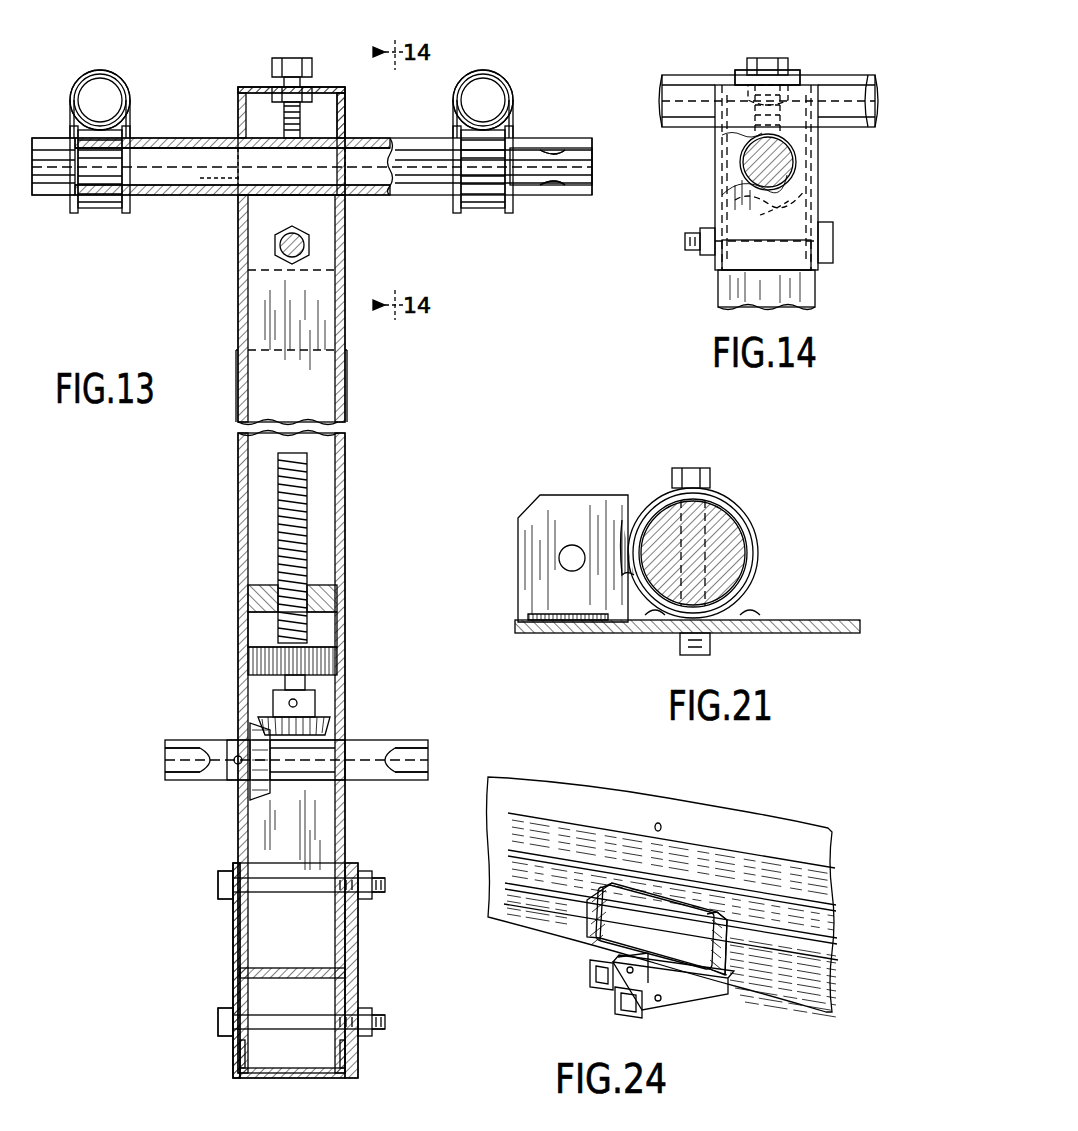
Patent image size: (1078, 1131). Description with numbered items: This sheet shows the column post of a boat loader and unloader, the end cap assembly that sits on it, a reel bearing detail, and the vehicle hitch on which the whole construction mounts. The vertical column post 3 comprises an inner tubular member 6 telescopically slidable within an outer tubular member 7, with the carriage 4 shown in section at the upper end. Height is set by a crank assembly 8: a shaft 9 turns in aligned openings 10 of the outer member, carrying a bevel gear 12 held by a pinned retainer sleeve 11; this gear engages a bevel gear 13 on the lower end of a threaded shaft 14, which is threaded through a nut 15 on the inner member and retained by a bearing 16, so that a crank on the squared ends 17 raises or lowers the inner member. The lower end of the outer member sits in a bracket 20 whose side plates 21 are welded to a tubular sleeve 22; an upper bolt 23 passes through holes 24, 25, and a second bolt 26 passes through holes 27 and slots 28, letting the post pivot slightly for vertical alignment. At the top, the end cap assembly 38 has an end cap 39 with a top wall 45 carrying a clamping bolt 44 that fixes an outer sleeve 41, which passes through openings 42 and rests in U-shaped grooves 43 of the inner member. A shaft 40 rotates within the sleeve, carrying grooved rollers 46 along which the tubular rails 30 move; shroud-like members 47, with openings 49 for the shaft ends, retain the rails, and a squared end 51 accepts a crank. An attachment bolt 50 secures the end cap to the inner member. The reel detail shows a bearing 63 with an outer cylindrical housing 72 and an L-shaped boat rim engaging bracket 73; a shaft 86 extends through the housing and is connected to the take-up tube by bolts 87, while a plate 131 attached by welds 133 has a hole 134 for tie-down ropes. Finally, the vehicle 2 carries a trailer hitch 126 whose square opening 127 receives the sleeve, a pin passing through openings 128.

In FIG. 24, the vehicle 2 is at (762, 828).
In FIG. 13, the vertical column post 3 is at (236, 452).
In FIG. 13, the carriage 4 is at (160, 200).
In FIG. 13, the inner tubular member 6 is at (238, 300).
In FIG. 14, the inner tubular member 6 is at (735, 288).
In FIG. 13, the outer tubular member 7 is at (238, 632).
In FIG. 13, the crank assembly 8 is at (283, 790).
In FIG. 13, the shaft 9 is at (369, 746).
In FIG. 13, the aligned openings 10 is at (245, 741).
In FIG. 13, the pinned retainer sleeve 11 is at (240, 748).
In FIG. 13, the bevel gear 12 is at (258, 790).
In FIG. 13, the bevel gear 13 is at (330, 720).
In FIG. 13, the threaded shaft 14 is at (308, 490).
In FIG. 13, the nut 15 is at (337, 606).
In FIG. 13, the bearing 16 is at (258, 660).
In FIG. 13, the squared ends 17 is at (168, 760).
In FIG. 13, the bracket 20 is at (362, 937).
In FIG. 13, the side plates 21 is at (233, 948).
In FIG. 13, the tubular sleeve 22 is at (256, 1076).
In FIG. 13, the upper bolt 23 is at (216, 892).
In FIG. 13, the holes 24 is at (362, 865).
In FIG. 13, the holes 25 is at (350, 869).
In FIG. 13, the second bolt 26 is at (218, 1023).
In FIG. 13, the holes 27 is at (358, 1014).
In FIG. 13, the slots 28 is at (236, 1040).
In FIG. 13, the tubular rails 30 is at (87, 78).
In FIG. 14, the tubular rails 30 is at (682, 75).
In FIG. 13, the end cap assembly 38 is at (235, 88).
In FIG. 14, the end cap assembly 38 is at (828, 182).
In FIG. 13, the end cap 39 is at (345, 116).
In FIG. 14, the end cap 39 is at (800, 262).
In FIG. 13, the shaft 40 is at (528, 180).
In FIG. 14, the shaft 40 is at (752, 176).
In FIG. 13, the outer sleeve 41 is at (185, 138).
In FIG. 14, the outer sleeve 41 is at (796, 148).
In FIG. 13, the openings 42 is at (240, 140).
In FIG. 14, the openings 42 is at (788, 182).
In FIG. 13, the U-shaped grooves 43 is at (240, 193).
In FIG. 14, the U-shaped grooves 43 is at (740, 188).
In FIG. 13, the clamping bolt 44 is at (300, 62).
In FIG. 14, the clamping bolt 44 is at (770, 58).
In FIG. 13, the top wall 45 is at (248, 88).
In FIG. 14, the top wall 45 is at (737, 85).
In FIG. 13, the grooved rollers 46 is at (98, 205).
In FIG. 14, the grooved rollers 46 is at (782, 210).
In FIG. 13, the shroud-like members 47 is at (104, 72).
In FIG. 14, the shroud-like members 47 is at (799, 75).
In FIG. 13, the openings 49 is at (74, 140).
In FIG. 13, the attachment bolt 50 is at (310, 244).
In FIG. 14, the attachment bolt 50 is at (835, 240).
In FIG. 13, the squared shaft end 51 is at (573, 140).
In FIG. 21, the bearing 63 is at (752, 518).
In FIG. 21, the outer cylindrical housing 72 is at (757, 544).
In FIG. 21, the L-shaped boat rim engaging bracket 73 is at (612, 633).
In FIG. 21, the shaft 86 is at (738, 568).
In FIG. 21, the bolts 87 is at (711, 478).
In FIG. 24, the trailer hitch 126 is at (697, 990).
In FIG. 24, the square opening 127 is at (595, 1015).
In FIG. 24, the openings 128 is at (665, 1003).
In FIG. 21, the plate 131 is at (590, 520).
In FIG. 21, the welds 133 is at (628, 524).
In FIG. 21, the hole 134 is at (567, 562).